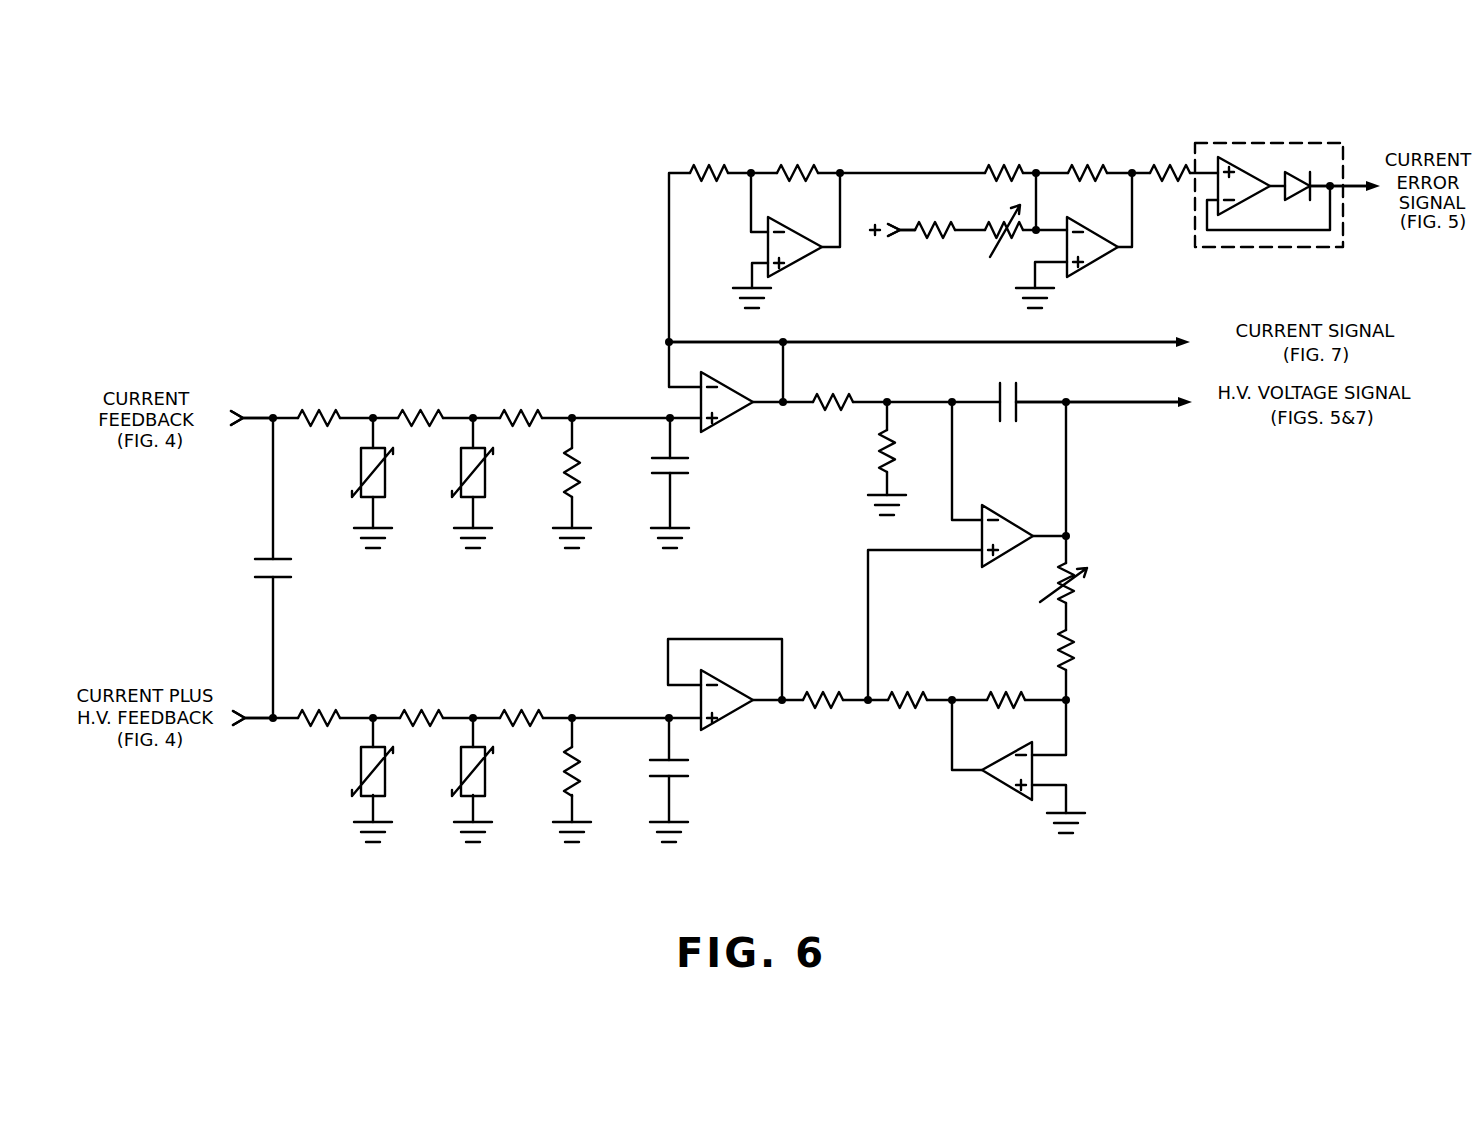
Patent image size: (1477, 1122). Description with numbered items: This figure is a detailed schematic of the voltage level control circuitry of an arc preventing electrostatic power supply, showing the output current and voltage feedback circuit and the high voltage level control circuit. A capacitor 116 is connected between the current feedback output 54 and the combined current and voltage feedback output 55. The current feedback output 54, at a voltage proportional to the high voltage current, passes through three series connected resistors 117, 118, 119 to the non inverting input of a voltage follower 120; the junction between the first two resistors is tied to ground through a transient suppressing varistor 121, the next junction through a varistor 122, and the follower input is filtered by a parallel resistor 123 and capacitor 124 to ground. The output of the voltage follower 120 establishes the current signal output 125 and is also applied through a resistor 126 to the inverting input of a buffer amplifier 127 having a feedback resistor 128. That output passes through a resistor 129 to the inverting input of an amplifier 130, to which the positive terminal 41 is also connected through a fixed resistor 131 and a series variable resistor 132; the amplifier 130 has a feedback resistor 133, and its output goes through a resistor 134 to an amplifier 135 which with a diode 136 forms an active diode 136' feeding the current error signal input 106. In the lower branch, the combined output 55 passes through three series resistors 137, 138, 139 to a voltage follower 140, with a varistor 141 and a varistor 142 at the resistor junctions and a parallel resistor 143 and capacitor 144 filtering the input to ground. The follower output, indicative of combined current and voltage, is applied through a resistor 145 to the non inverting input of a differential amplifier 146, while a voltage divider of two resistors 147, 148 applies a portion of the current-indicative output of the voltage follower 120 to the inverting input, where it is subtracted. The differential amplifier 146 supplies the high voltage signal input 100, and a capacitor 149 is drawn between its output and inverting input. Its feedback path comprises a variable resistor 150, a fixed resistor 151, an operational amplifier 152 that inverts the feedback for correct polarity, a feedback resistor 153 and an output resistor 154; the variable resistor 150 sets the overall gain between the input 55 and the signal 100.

The positive terminal 41 is at (893, 238).
The current feedback output 54 is at (259, 414).
The combined current and voltage feedback output 55 is at (250, 723).
The high voltage signal input 100 is at (1143, 404).
The current error signal input 106 is at (1355, 185).
The capacitor 116 is at (262, 577).
The resistor 117 is at (311, 410).
The resistor 118 is at (413, 410).
The resistor 119 is at (528, 410).
The voltage follower 120 is at (727, 410).
The transient suppressing varistor 121 is at (388, 488).
The transient suppressing varistor 122 is at (488, 488).
The resistor 123 is at (582, 478).
The capacitor 124 is at (683, 475).
The current signal output 125 is at (1158, 338).
The resistor 126 is at (700, 170).
The buffer amplifier 127 is at (797, 262).
The feedback resistor 128 is at (800, 170).
The resistor 129 is at (1000, 168).
The amplifier 130 is at (1093, 262).
The fixed resistor 131 is at (940, 250).
The variable resistor 132 is at (1004, 248).
The feedback resistor 133 is at (1090, 168).
The resistor 134 is at (1168, 168).
The amplifier 135 is at (1245, 170).
The diode 136 is at (1324, 153).
The active diode 136' is at (1283, 222).
The resistor 137 is at (312, 710).
The resistor 138 is at (413, 710).
The resistor 139 is at (517, 710).
The voltage follower 140 is at (727, 708).
The transient suppressing varistor 141 is at (388, 787).
The varistor 142 is at (488, 787).
The resistor 143 is at (582, 780).
The capacitor 144 is at (678, 778).
The resistor 145 is at (823, 695).
The differential amplifier 146 is at (1002, 515).
The resistor 147 is at (838, 398).
The resistor 148 is at (880, 440).
The capacitor 149 is at (1018, 390).
The variable resistor 150 is at (1085, 590).
The fixed resistor 151 is at (1076, 660).
The operational amplifier 152 is at (1008, 789).
The feedback resistor 153 is at (1000, 695).
The output resistor 154 is at (896, 710).